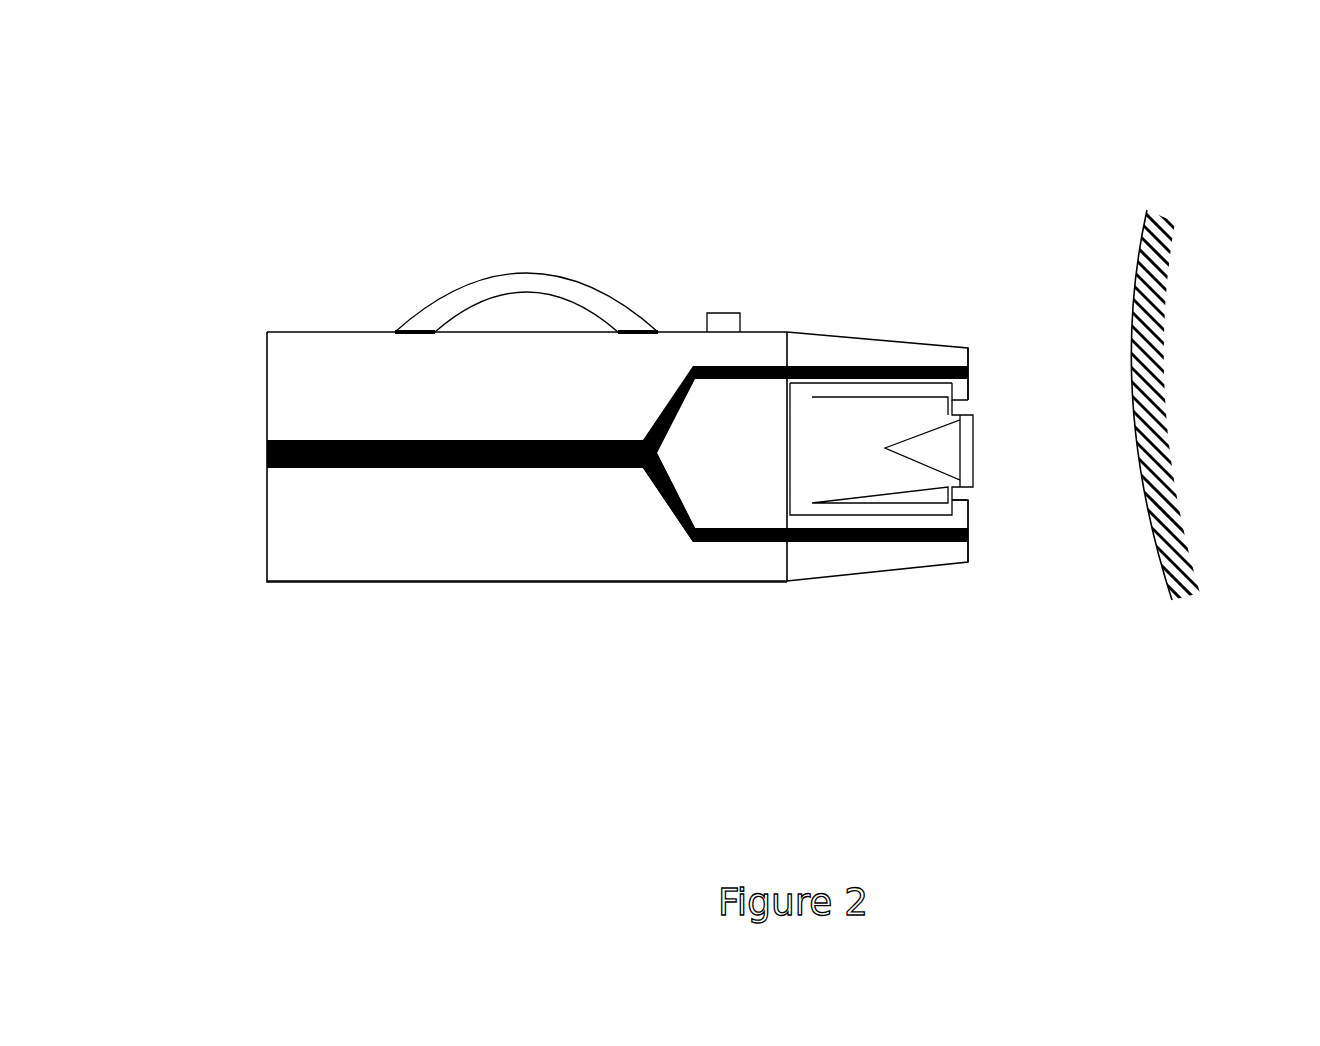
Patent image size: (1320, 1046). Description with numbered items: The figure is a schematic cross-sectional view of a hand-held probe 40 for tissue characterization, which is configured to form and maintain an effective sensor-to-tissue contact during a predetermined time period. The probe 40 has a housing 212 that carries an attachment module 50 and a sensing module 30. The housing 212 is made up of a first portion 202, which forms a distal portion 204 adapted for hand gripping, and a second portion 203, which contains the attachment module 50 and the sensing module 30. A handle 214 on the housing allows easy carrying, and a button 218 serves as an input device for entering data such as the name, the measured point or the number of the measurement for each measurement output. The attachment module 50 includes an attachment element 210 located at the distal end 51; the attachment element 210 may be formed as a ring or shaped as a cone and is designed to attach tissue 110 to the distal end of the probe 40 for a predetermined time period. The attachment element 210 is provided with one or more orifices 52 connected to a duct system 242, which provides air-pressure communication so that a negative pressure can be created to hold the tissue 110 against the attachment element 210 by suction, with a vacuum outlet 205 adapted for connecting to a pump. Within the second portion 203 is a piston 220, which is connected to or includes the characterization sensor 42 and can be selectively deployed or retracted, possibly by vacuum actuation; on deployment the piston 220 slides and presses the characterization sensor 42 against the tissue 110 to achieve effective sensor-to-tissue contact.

The probe 40 is at (313, 202).
The first portion 202 is at (282, 563).
The distal portion 204 is at (313, 385).
The housing 212 is at (528, 582).
The handle 214 is at (505, 257).
The button 218 is at (740, 323).
The second portion 203 is at (805, 330).
The vacuum outlet 205 is at (267, 458).
The duct system 242 is at (675, 507).
The attachment module 50 is at (815, 343).
The sensing module 30 is at (918, 475).
The piston 220 is at (887, 490).
The characterization sensor 42 is at (975, 450).
The orifices 52 is at (950, 380).
The distal end 51 is at (962, 310).
The attachment element 210 is at (968, 502).
The tissue 110 is at (1172, 297).